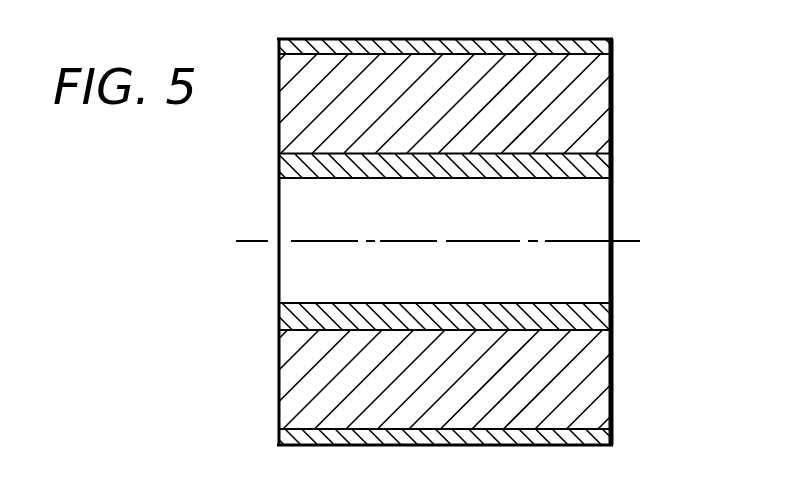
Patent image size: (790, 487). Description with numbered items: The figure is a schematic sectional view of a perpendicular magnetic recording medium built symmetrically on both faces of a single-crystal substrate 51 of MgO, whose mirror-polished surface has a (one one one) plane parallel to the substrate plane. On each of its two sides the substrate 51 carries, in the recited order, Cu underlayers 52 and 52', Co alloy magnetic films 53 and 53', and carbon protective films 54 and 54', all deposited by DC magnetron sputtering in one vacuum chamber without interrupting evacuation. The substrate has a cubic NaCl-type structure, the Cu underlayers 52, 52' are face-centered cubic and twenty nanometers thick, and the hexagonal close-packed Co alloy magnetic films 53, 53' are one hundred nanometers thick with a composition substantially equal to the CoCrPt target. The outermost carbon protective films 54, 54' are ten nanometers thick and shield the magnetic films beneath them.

The single-crystal substrate 51 is at (604, 269).
The Cu underlayer 52 is at (475, 168).
The Cu underlayer 52' is at (478, 316).
The Co alloy magnetic film 53 is at (475, 104).
The Co alloy magnetic film 53' is at (478, 379).
The carbon protective film 54 is at (474, 46).
The carbon protective film 54' is at (477, 437).